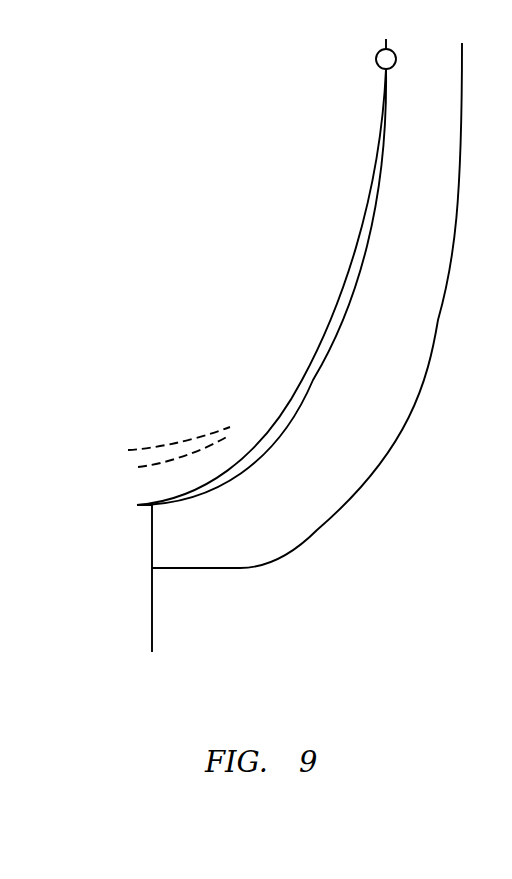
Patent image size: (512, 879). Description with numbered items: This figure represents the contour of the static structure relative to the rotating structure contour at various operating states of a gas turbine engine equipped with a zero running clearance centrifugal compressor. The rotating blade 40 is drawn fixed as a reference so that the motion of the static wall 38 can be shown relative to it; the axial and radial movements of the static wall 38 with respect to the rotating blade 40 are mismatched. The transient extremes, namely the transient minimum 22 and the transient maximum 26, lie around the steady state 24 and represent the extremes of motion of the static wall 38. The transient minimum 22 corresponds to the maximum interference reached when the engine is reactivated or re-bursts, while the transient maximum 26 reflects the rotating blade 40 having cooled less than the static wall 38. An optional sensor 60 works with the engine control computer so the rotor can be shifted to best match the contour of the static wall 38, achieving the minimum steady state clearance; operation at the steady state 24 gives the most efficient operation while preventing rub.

The transient minimum 22 is at (132, 466).
The steady state 24 is at (125, 508).
The transient maximum 26 is at (124, 449).
The static wall 38 is at (318, 335).
The rotating blade 40 is at (356, 338).
The sensor 60 is at (376, 60).